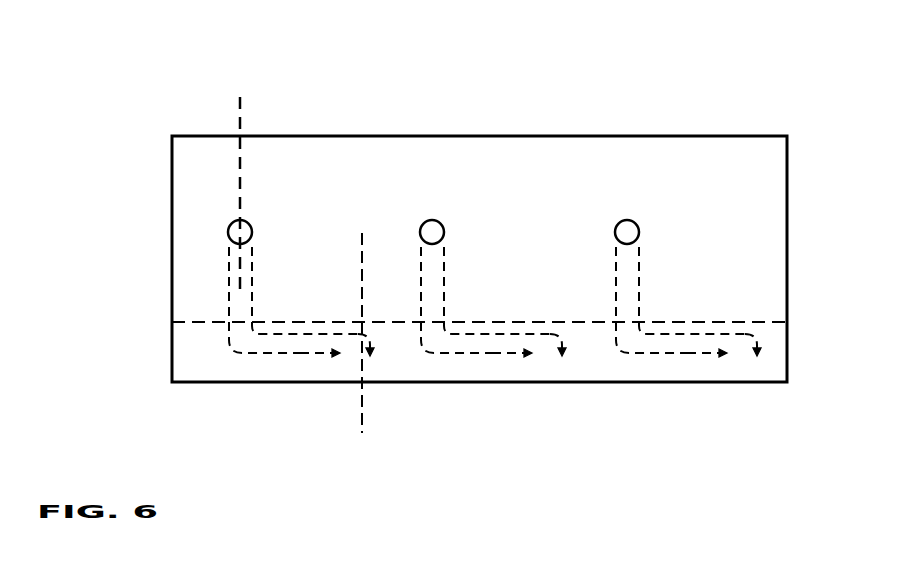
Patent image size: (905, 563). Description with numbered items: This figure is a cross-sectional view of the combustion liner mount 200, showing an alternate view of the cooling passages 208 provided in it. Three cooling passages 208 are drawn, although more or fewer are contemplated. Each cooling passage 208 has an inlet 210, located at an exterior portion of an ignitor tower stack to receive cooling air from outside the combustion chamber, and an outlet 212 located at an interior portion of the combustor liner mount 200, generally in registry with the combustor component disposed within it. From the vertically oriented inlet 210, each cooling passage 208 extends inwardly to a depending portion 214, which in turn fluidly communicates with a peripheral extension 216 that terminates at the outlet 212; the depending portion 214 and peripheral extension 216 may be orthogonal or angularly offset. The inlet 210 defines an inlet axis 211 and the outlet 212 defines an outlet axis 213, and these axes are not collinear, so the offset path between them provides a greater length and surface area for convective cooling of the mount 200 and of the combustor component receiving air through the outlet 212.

The combustion liner mount 200 is at (137, 192).
The cooling passage 208 is at (253, 245).
The inlet 210 is at (241, 220).
The inlet axis 211 is at (246, 215).
The outlet 212 is at (352, 360).
The outlet axis 213 is at (363, 272).
The depending portion 214 is at (222, 280).
The peripheral extension 216 is at (273, 355).